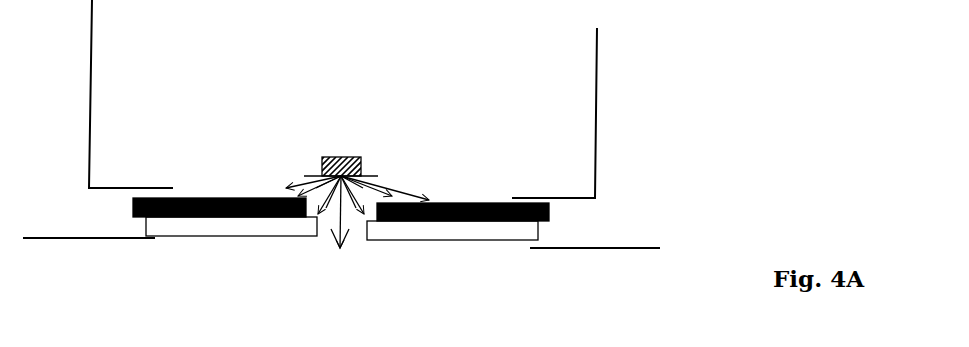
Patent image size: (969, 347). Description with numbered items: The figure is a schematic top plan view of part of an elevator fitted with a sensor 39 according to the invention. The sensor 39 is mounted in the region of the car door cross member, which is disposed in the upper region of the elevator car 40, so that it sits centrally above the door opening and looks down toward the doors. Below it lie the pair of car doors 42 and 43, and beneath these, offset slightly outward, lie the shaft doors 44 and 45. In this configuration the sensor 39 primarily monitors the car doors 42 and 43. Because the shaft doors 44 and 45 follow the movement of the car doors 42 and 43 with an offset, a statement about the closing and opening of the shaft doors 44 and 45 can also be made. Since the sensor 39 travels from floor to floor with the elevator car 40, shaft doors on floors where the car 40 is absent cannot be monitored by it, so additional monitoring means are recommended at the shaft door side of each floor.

The sensor 39 is at (348, 157).
The elevator car 40 is at (594, 94).
The car door 42 is at (488, 203).
The car door 43 is at (187, 197).
The shaft door 44 is at (503, 240).
The shaft door 45 is at (207, 236).